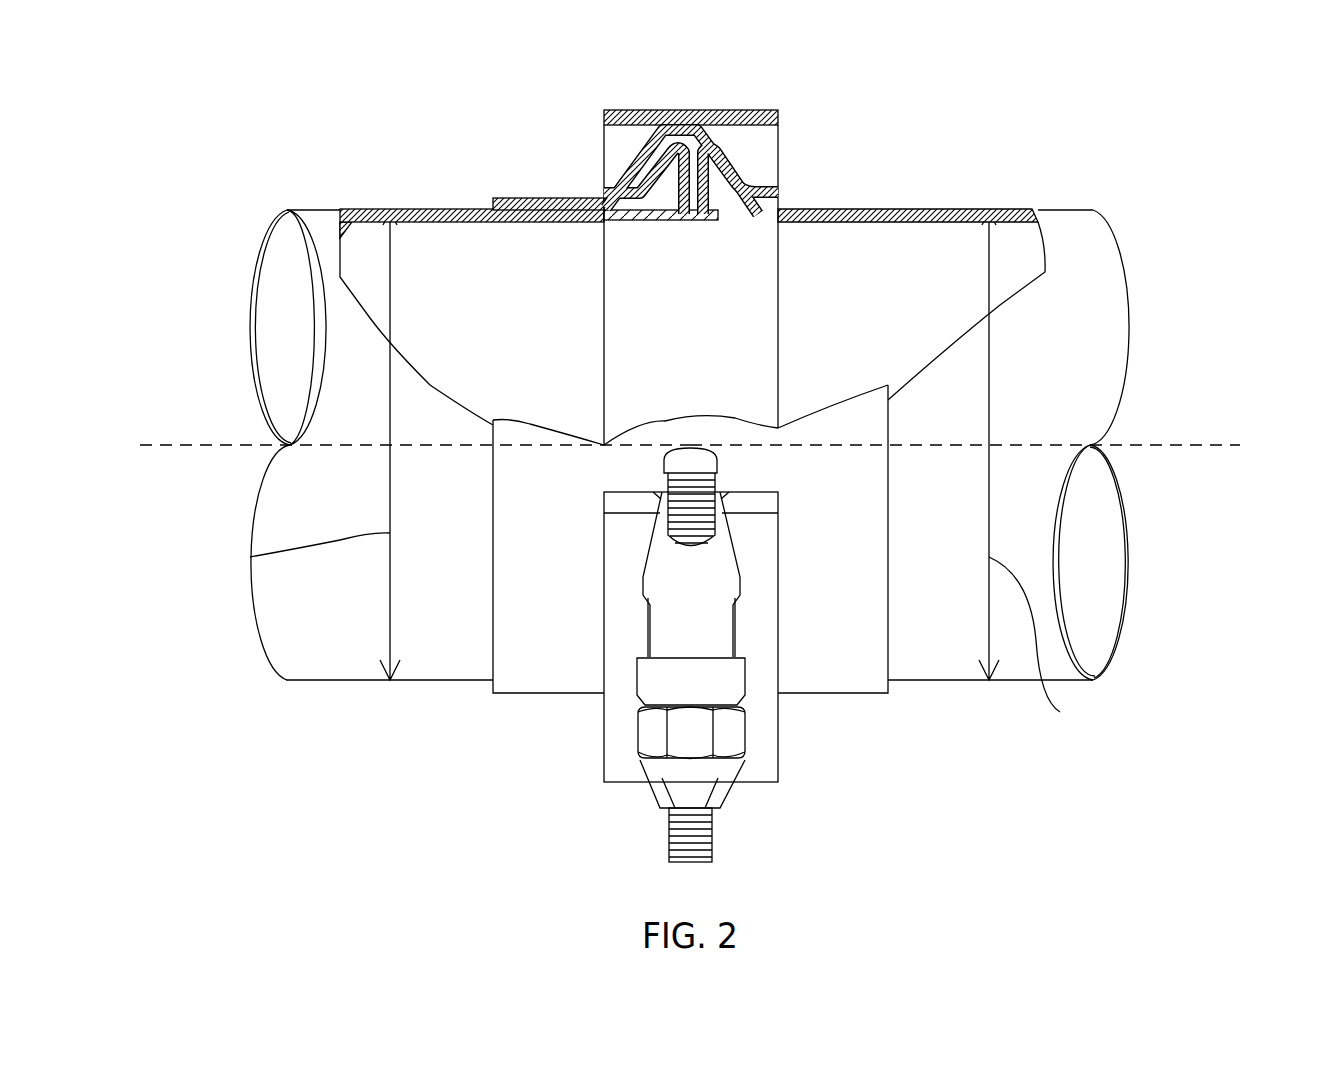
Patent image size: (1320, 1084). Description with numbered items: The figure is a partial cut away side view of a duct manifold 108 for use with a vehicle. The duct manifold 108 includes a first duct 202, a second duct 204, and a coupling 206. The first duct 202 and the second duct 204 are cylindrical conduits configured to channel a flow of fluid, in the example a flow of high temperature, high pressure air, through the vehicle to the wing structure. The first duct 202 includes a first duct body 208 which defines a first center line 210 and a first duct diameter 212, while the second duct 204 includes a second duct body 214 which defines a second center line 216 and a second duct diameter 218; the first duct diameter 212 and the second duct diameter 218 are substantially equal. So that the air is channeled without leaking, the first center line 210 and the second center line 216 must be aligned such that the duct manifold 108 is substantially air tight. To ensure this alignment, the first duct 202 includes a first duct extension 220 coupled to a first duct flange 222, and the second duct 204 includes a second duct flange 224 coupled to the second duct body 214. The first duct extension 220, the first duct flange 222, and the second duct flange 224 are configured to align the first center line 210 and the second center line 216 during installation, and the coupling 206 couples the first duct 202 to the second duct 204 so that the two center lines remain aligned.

The duct manifold 108 is at (240, 106).
The first duct 202 is at (330, 402).
The second duct 204 is at (1052, 603).
The coupling 206 is at (648, 122).
The first duct body 208 is at (330, 462).
The first center line 210 is at (180, 447).
The first duct diameter 212 is at (250, 557).
The second duct body 214 is at (1078, 243).
The second center line 216 is at (1208, 452).
The second duct diameter 218 is at (1060, 712).
The first duct extension 220 is at (640, 185).
The first duct flange 222 is at (578, 197).
The second duct flange 224 is at (843, 207).